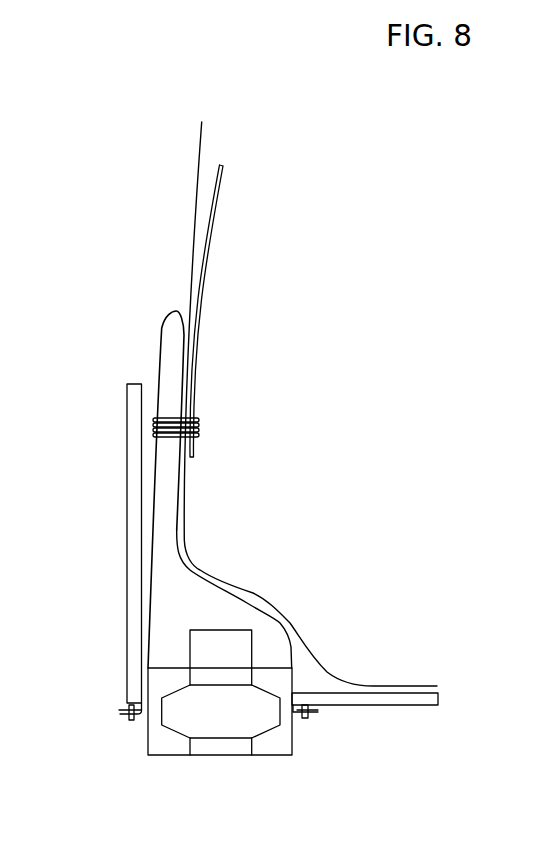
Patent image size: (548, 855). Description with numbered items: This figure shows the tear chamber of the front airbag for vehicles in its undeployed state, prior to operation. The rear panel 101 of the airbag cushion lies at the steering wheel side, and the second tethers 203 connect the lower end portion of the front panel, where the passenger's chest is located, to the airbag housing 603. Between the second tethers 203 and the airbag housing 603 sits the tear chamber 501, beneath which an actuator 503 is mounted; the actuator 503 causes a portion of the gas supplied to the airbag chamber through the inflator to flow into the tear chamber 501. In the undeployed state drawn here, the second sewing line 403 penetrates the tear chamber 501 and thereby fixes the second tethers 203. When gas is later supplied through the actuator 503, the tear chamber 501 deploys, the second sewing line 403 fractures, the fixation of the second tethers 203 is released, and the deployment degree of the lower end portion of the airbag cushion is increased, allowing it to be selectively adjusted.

The rear panel 101 is at (322, 667).
The second tethers 203 is at (213, 232).
The second sewing line 403 is at (200, 418).
The tear chamber 501 is at (162, 332).
The actuator 503 is at (217, 722).
The airbag housing 603 is at (127, 639).